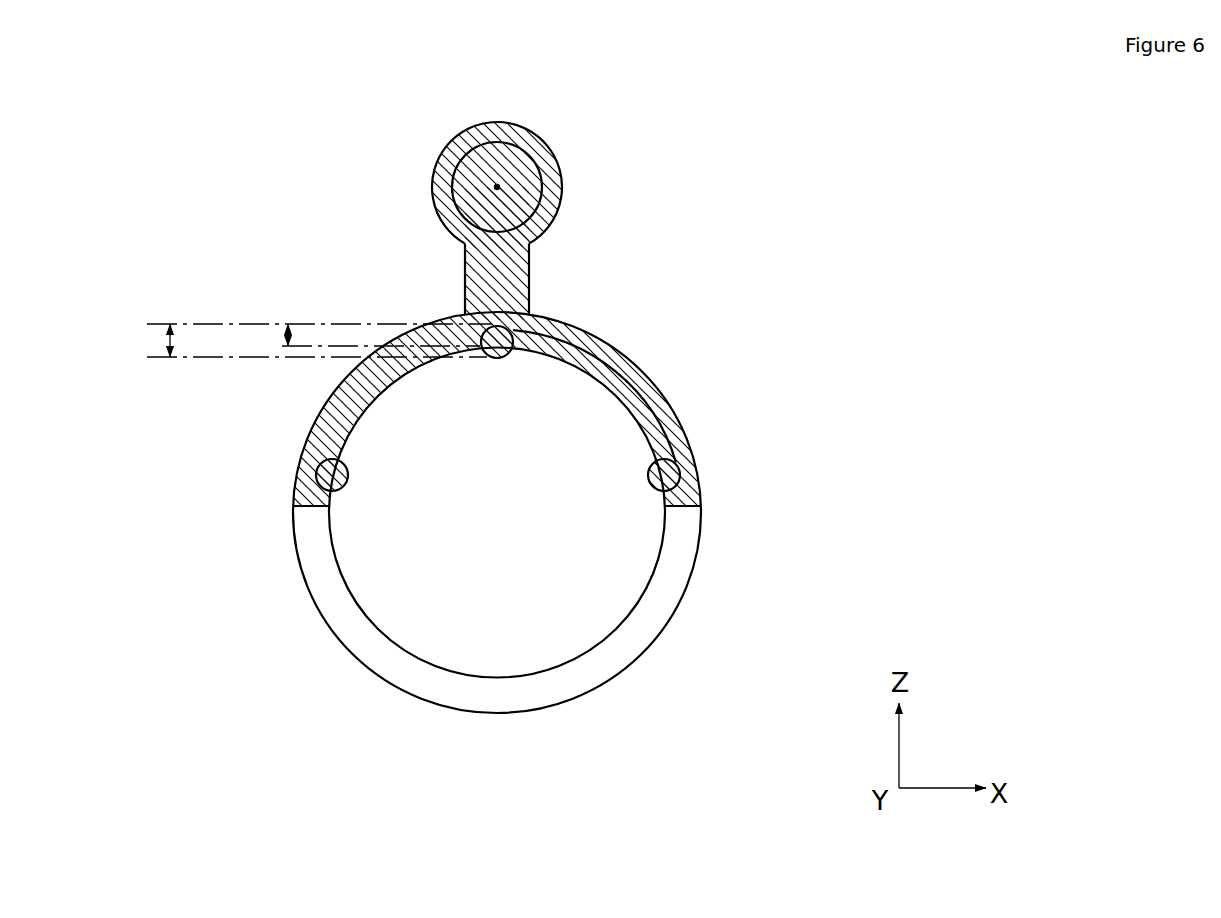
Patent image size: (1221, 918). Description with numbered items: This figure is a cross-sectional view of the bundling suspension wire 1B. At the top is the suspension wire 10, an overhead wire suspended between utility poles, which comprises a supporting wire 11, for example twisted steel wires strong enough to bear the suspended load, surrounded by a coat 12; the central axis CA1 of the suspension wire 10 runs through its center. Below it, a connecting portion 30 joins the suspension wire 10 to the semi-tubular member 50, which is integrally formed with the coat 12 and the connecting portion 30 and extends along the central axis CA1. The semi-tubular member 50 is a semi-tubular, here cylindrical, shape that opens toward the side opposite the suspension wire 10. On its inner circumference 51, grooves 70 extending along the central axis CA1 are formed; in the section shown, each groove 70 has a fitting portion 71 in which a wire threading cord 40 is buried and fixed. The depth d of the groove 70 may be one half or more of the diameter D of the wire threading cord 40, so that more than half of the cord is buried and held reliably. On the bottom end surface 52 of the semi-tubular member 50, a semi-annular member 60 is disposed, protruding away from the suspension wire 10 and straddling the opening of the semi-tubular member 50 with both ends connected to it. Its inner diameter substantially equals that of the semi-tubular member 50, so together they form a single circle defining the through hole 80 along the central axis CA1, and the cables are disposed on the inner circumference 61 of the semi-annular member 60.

The bundling suspension wire 1B is at (644, 134).
The suspension wire 10 is at (488, 120).
The supporting wire 11 is at (472, 187).
The coat 12 is at (520, 126).
The central axis CA1 is at (498, 187).
The connecting portion 30 is at (530, 272).
The wire threading cord 40 is at (513, 334).
The semi-tubular member 50 is at (656, 383).
The inner circumference 51 is at (631, 414).
The bottom end surface 52 is at (313, 507).
The semi-annular member 60 is at (670, 626).
The inner circumference 61 is at (538, 672).
The groove 70 is at (320, 464).
The fitting portion 71 is at (500, 397).
The through hole 80 is at (360, 598).
The diameter D is at (168, 342).
The depth d is at (290, 336).